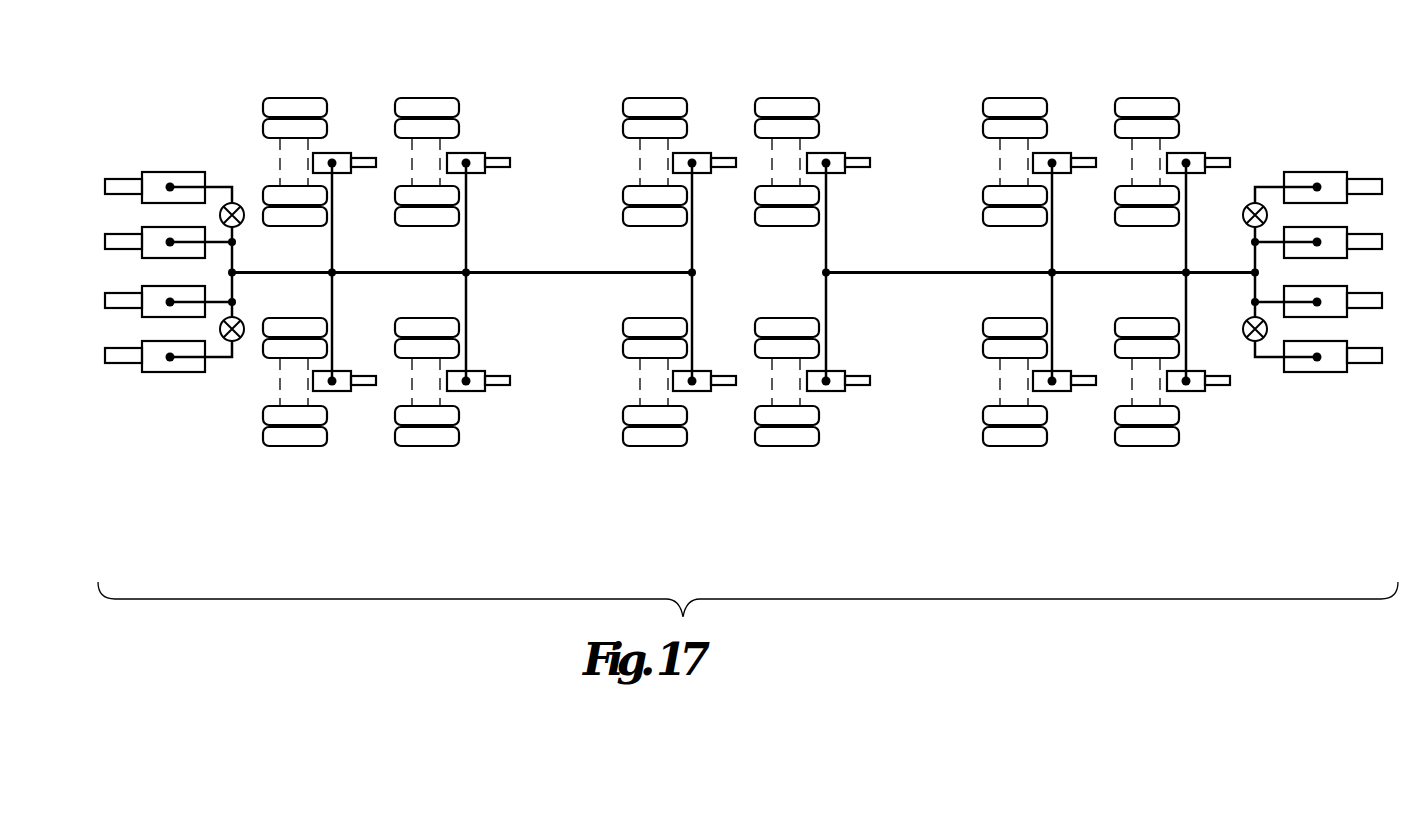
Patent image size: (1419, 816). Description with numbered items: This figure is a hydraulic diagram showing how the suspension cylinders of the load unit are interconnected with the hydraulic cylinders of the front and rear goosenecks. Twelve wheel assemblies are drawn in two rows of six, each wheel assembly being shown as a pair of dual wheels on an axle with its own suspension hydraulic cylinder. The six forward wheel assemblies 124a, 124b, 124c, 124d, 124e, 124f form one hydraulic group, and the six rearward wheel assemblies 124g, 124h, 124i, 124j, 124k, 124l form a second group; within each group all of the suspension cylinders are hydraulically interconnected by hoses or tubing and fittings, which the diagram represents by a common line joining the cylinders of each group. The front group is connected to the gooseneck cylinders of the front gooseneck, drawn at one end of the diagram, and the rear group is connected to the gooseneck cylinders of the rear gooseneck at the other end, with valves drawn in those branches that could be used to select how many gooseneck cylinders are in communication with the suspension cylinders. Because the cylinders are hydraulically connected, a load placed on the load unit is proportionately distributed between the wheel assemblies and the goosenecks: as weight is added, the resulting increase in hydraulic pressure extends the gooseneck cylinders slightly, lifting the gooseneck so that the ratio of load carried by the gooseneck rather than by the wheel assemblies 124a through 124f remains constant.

The wheel assembly 124a is at (1132, 101).
The wheel assembly 124b is at (1132, 443).
The wheel assembly 124c is at (1000, 101).
The wheel assembly 124d is at (1000, 443).
The wheel assembly 124e is at (772, 101).
The wheel assembly 124f is at (772, 443).
The wheel assembly 124g is at (640, 101).
The wheel assembly 124h is at (640, 443).
The wheel assembly 124i is at (412, 101).
The wheel assembly 124j is at (415, 443).
The wheel assembly 124k is at (280, 101).
The wheel assembly 124l is at (280, 443).